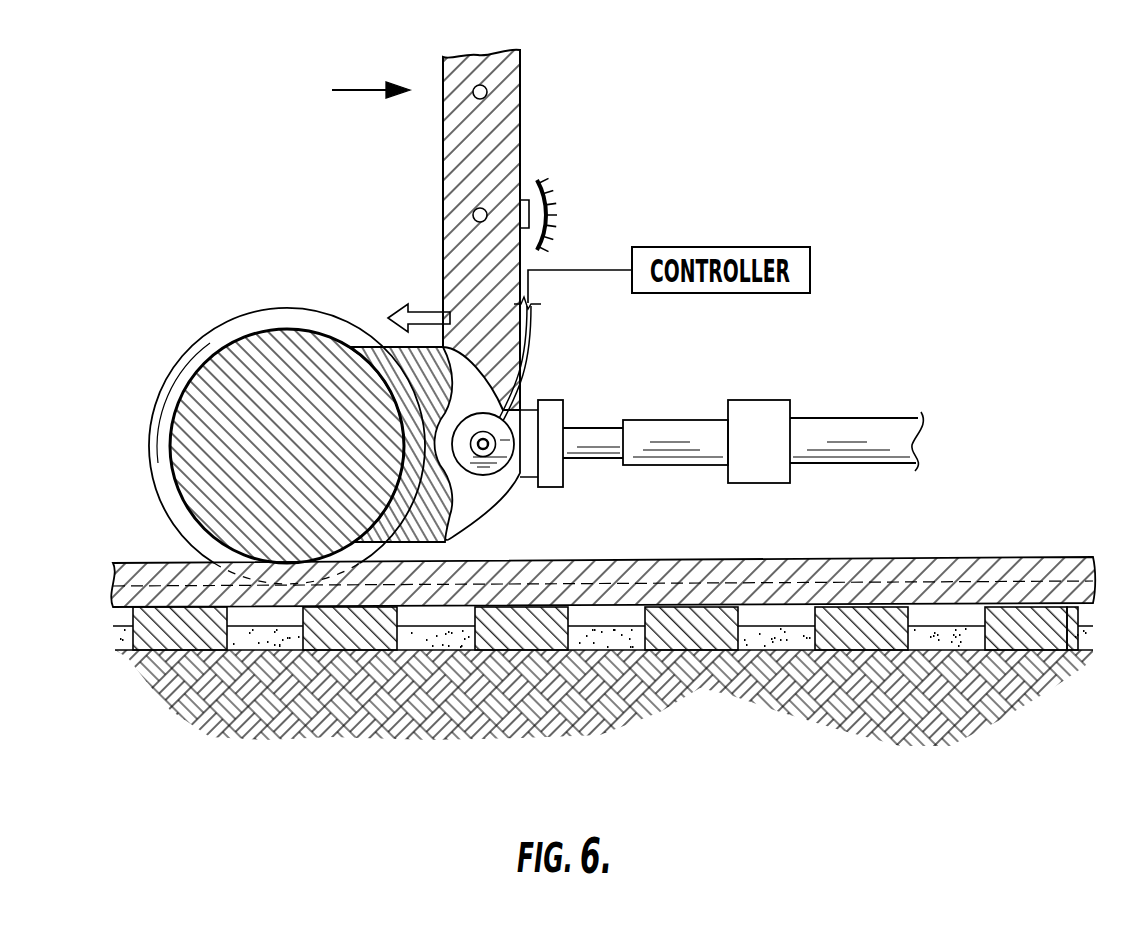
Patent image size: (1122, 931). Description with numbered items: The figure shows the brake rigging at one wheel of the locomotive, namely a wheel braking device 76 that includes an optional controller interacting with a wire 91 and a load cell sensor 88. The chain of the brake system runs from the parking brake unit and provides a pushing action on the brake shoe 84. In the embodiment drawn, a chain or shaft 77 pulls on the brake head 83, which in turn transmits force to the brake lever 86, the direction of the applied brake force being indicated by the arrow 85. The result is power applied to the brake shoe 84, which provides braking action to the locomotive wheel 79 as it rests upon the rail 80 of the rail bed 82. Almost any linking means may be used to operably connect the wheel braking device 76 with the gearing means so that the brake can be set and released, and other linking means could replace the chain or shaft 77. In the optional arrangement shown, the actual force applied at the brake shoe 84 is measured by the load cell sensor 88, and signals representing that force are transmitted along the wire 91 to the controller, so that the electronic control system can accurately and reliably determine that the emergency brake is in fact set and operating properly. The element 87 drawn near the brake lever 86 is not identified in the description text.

The wheel braking device 76 is at (745, 395).
The chain or shaft 77 is at (676, 425).
The locomotive wheel 79 is at (238, 323).
The rail 80 is at (148, 562).
The rail bed 82 is at (130, 626).
The brake head 83 is at (472, 505).
The brake shoe 84 is at (377, 347).
The arrow 85 is at (378, 90).
The brake lever 86 is at (485, 142).
The sensor / gauge 87 is at (532, 190).
The load cell sensor 88 is at (483, 444).
The wire 91 is at (513, 374).